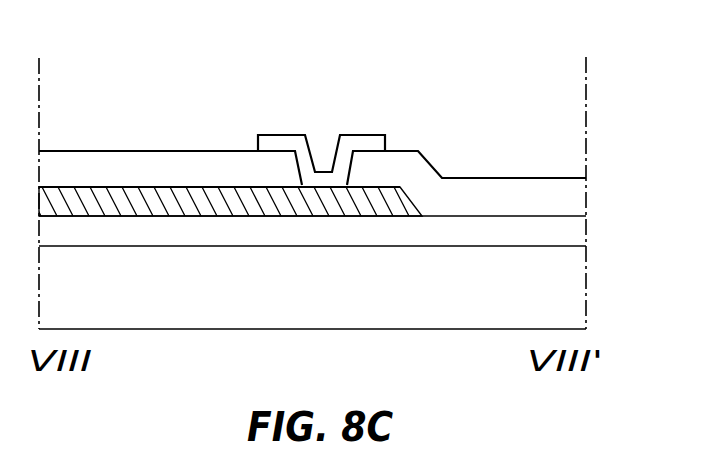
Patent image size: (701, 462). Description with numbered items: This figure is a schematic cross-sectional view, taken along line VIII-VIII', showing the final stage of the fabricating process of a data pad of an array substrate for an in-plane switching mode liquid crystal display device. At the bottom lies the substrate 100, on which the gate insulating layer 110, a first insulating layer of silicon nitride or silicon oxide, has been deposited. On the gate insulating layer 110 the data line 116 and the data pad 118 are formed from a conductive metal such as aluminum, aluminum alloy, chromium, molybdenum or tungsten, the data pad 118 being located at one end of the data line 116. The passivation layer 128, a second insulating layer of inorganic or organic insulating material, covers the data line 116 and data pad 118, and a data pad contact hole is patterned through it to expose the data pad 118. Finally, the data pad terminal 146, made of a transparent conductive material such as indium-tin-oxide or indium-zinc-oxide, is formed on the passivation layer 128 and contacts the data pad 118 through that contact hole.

The substrate 100 is at (288, 299).
The gate insulating layer 110 is at (498, 220).
The data line 116 is at (160, 187).
The data pad 118 is at (327, 207).
The passivation layer 128 is at (99, 141).
The data pad terminal 146 is at (353, 135).